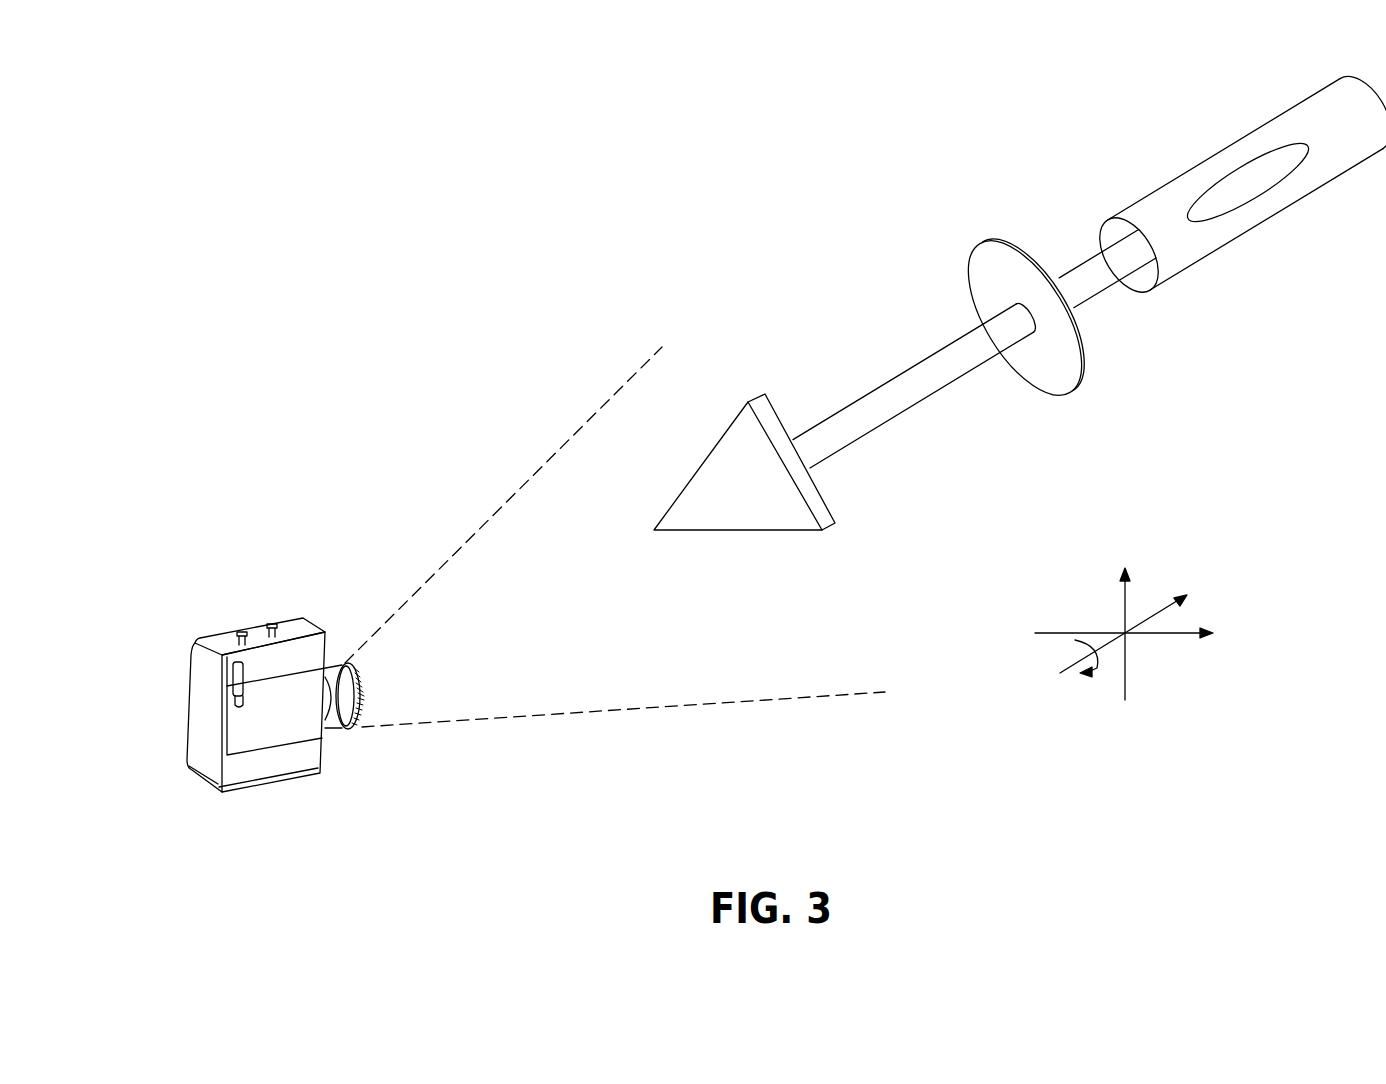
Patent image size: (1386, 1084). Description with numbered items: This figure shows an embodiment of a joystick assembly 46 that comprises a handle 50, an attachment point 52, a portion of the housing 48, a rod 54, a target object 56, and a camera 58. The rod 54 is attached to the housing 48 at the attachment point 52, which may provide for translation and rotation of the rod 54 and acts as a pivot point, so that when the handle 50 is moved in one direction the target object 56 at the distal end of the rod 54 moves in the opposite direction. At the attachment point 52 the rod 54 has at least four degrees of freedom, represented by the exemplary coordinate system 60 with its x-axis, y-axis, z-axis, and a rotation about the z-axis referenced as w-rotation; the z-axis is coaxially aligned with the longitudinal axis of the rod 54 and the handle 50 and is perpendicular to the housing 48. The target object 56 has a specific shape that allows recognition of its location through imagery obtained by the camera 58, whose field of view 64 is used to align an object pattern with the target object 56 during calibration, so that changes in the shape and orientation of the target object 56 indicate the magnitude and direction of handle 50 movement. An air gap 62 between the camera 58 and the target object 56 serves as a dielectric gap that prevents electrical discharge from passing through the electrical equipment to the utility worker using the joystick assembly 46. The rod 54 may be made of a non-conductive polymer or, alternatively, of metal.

The joystick assembly 46 is at (602, 222).
The housing 48 is at (1040, 385).
The handle 50 is at (1230, 142).
The attachment point 52 is at (996, 290).
The rod 54 is at (893, 422).
The target object 56 is at (692, 520).
The camera 58 is at (197, 725).
The coordinate system 60 is at (1187, 683).
The air gap 62 is at (615, 537).
The field of view 64 is at (512, 498).